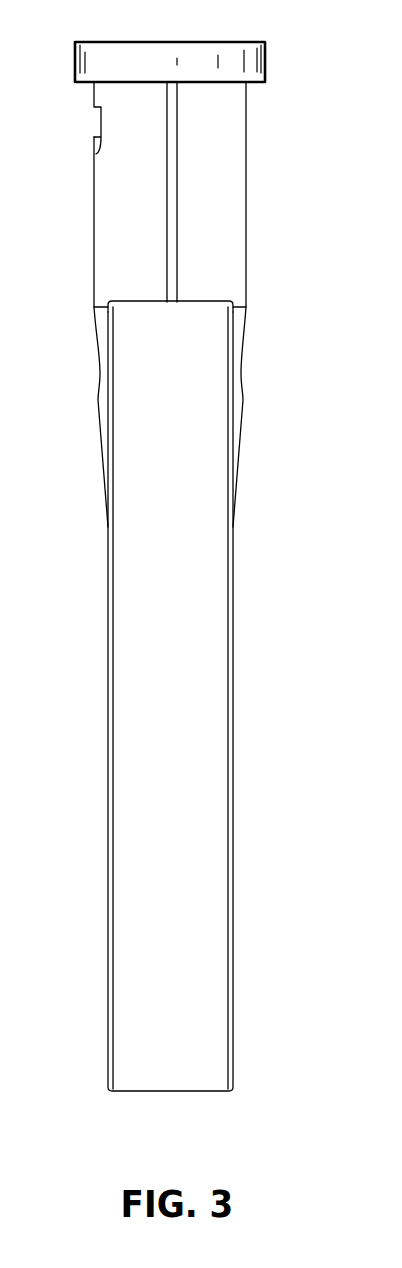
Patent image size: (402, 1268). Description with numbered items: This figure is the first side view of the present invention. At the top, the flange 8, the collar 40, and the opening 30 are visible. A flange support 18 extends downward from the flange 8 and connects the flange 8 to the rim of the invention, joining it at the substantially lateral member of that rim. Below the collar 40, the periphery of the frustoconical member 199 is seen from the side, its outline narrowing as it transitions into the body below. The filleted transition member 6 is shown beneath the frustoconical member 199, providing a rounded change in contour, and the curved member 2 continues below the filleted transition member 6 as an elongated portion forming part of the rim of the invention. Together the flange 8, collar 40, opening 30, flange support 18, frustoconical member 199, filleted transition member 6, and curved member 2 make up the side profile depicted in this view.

The curved member 2 is at (188, 878).
The filleted transition member 6 is at (207, 320).
The flange 8 is at (183, 48).
The flange support 18 is at (178, 202).
The opening 30 is at (95, 123).
The collar 40 is at (230, 250).
The frustoconical member 199 is at (240, 358).